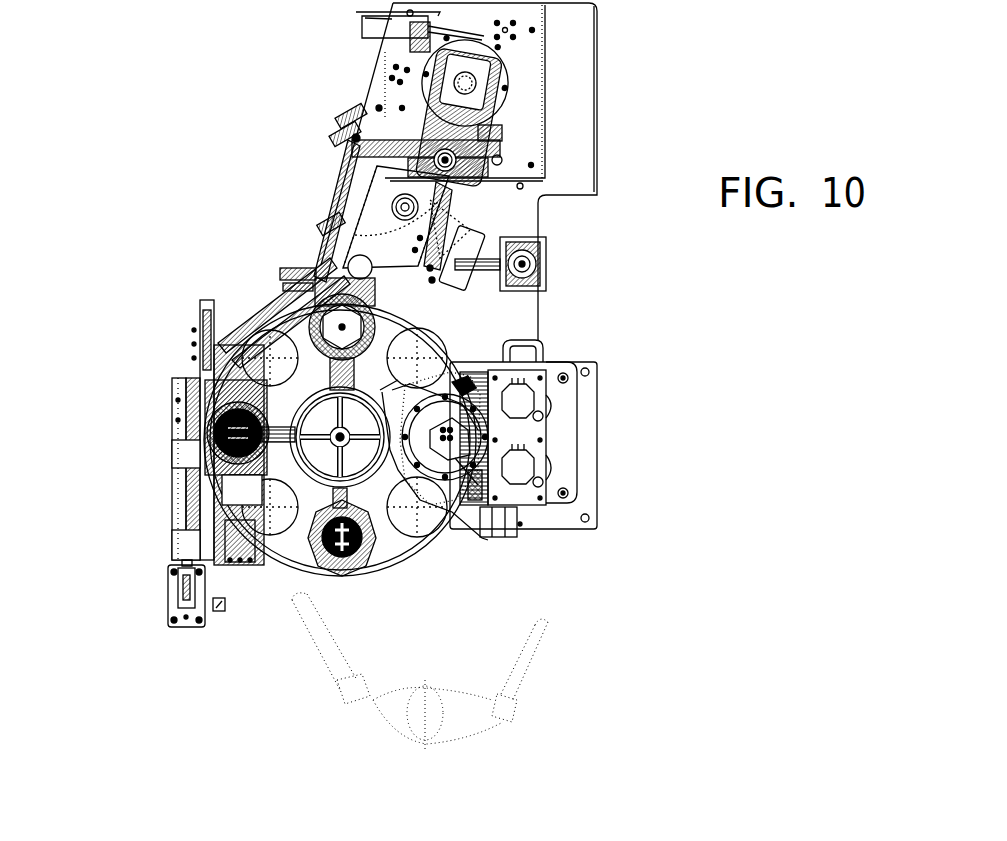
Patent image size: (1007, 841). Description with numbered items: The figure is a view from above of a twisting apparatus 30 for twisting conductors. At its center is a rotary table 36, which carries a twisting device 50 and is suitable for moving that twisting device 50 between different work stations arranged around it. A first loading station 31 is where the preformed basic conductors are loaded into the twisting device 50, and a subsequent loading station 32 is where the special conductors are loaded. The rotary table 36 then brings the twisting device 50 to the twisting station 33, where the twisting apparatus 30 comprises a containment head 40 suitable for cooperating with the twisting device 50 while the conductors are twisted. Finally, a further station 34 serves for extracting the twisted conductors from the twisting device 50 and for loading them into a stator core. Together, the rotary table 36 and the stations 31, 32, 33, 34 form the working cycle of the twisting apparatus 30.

The twisting apparatus 30 is at (176, 102).
The loading station 31 is at (165, 438).
The loading station 32 is at (340, 572).
The twisting station 33 is at (558, 338).
The extraction and loading station 34 is at (318, 212).
The rotary table 36 is at (247, 312).
The containment head 40 is at (455, 457).
The twisting device 50 is at (373, 547).